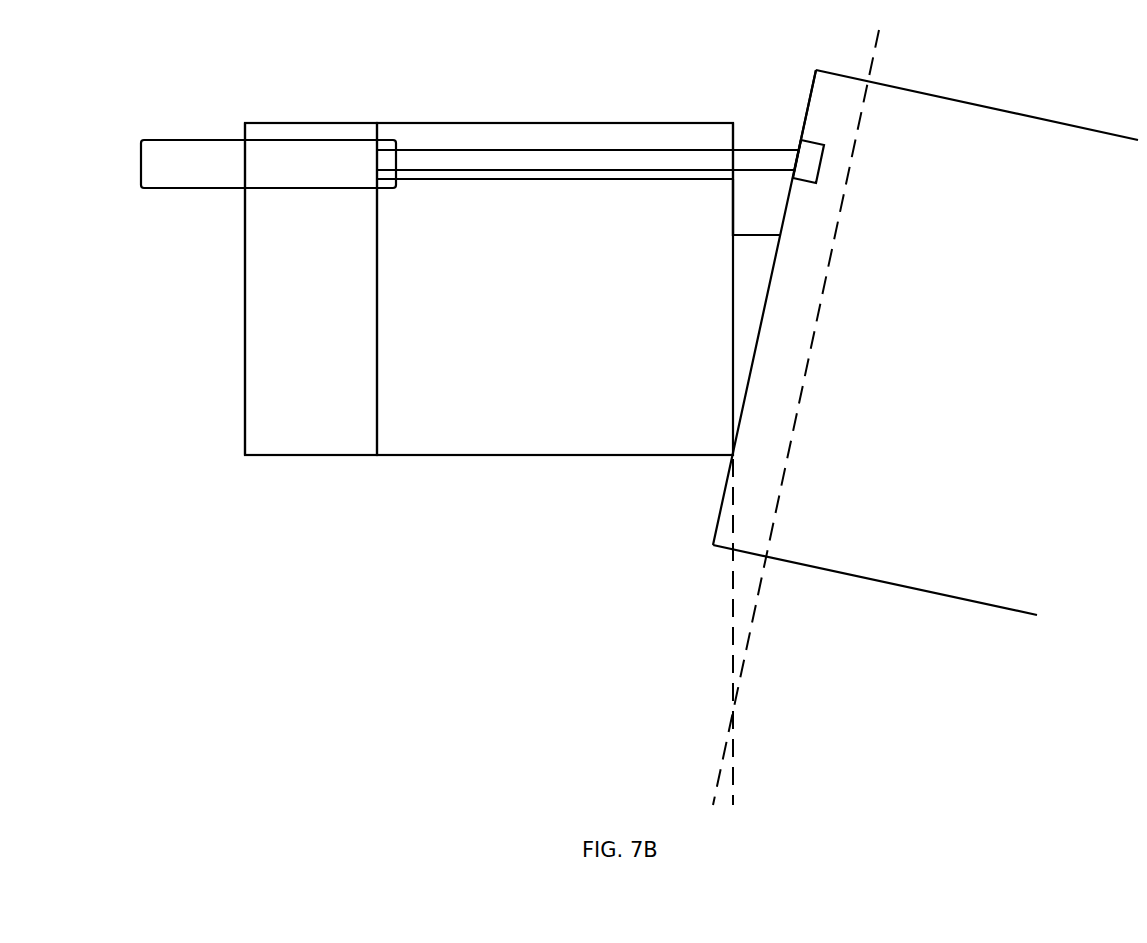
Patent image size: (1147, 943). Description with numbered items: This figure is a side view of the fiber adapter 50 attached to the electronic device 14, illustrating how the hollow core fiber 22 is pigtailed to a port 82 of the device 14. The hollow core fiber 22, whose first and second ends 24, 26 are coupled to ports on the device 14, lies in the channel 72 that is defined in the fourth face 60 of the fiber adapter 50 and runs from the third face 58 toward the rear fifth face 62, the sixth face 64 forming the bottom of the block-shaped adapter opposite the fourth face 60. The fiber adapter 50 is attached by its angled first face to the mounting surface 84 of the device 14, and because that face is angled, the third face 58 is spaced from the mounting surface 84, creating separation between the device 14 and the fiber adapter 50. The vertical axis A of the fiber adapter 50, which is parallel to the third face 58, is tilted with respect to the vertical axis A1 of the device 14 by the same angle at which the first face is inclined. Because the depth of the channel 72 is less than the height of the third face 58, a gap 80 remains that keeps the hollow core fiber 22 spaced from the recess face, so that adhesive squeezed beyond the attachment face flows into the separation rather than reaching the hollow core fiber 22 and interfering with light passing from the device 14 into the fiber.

The device 14 is at (978, 103).
The hollow core fiber 22 is at (179, 139).
The first end 24 is at (758, 151).
The second end 26 is at (588, 160).
The fiber adapter 50 is at (265, 122).
The third face 58 is at (732, 207).
The fourth face 60 is at (468, 123).
The fifth face 62 is at (245, 302).
The sixth face 64 is at (443, 455).
The channel 72 is at (625, 138).
The gap 80 is at (756, 207).
The port 82 is at (817, 140).
The mounting surface 84 is at (810, 88).
The vertical axis A is at (732, 346).
The vertical axis of the device A1 is at (822, 293).